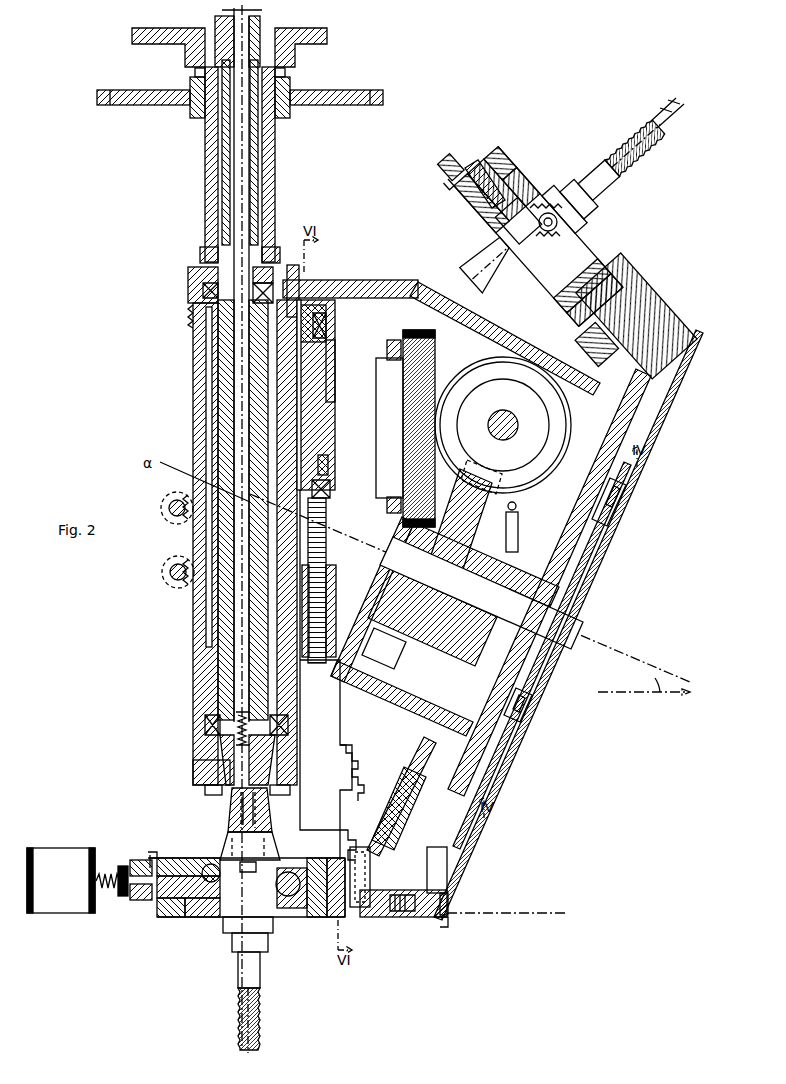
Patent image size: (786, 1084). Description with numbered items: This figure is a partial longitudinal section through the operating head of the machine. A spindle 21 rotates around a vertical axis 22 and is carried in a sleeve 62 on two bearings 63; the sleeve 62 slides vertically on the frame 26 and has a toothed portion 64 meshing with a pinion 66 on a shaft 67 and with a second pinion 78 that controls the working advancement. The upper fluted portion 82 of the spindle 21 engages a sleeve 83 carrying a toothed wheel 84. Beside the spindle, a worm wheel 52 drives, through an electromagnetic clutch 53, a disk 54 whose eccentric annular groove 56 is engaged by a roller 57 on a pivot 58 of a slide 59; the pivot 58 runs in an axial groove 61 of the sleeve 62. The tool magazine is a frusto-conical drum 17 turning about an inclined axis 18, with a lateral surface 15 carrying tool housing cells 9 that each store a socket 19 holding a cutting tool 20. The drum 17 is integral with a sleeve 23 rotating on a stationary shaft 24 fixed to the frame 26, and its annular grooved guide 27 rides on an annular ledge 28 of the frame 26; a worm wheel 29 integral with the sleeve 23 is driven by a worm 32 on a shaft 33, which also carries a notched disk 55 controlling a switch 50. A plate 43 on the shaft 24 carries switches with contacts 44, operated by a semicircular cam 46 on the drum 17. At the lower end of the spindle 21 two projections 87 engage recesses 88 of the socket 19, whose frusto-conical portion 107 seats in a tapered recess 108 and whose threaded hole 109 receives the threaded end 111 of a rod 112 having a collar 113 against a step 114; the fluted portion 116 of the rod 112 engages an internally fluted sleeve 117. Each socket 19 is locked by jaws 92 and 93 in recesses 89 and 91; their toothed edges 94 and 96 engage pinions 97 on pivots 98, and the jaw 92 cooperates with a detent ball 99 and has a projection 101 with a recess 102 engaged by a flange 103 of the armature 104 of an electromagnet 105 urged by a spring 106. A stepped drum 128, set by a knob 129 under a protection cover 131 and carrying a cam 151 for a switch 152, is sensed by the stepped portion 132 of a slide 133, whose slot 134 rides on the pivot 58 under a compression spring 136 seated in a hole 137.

The tool housing cell 9 is at (185, 920).
The lateral surface 15 is at (435, 925).
The frusto-conical shaped drum 17 is at (655, 310).
The drum axis 18 is at (600, 652).
The tool holding socket 19 is at (215, 925).
The cutting tool 20 is at (252, 970).
The spindle 21 is at (225, 415).
The vertical axis 22 is at (242, 440).
The sleeve 23 is at (480, 610).
The shaft 24 is at (465, 590).
The frame 26 is at (312, 28).
The annular grooved guide 27 is at (603, 342).
The annular ledge 28 is at (660, 405).
The worm wheel 29 is at (475, 520).
The worm 32 is at (485, 375).
The shaft 33 is at (500, 420).
The plate 43 is at (525, 735).
The contact 44 is at (612, 540).
The semicircular cam 46 is at (625, 495).
The switch 50 is at (515, 512).
The worm wheel 52 is at (392, 340).
The electromagnetic clutch 53 is at (392, 512).
The disk 54 is at (327, 335).
The disk 55 is at (566, 410).
The annular groove 56 is at (328, 465).
The roller 57 is at (313, 318).
The pivot 58 is at (300, 300).
The slide 59 is at (310, 352).
The axial groove 61 is at (290, 276).
The sleeve 62 is at (300, 392).
The bearings 63 is at (190, 283).
The toothed portion 64 is at (190, 314).
The pinion 66 is at (178, 580).
The shaft 67 is at (176, 560).
The second pinion 78 is at (178, 492).
The fluted portion 82 is at (258, 160).
The sleeve 83 is at (275, 195).
The toothed wheel 84 is at (325, 104).
The projections 87 is at (205, 790).
The recesses 88 is at (212, 864).
The locking recess 89 is at (210, 876).
The locking recess 91 is at (292, 905).
The jaw 92 is at (192, 865).
The jaw 93 is at (318, 915).
The toothed edges 94 is at (545, 262).
The toothed edges 96 is at (558, 180).
The pinions 97 is at (556, 235).
The pivots 98 is at (520, 215).
The detent ball 99 is at (160, 898).
The projection 101 is at (158, 860).
The recess 102 is at (145, 855).
The flange 103 is at (135, 902).
The armature 104 is at (122, 893).
The electromagnet 105 is at (55, 855).
The spring 106 is at (108, 875).
The frusto-conical portion 107 is at (283, 824).
The tapered recess 108 is at (233, 795).
The threaded hole 109 is at (262, 806).
The threaded end 111 is at (228, 740).
The rod 112 is at (242, 660).
The collar 113 is at (200, 71).
The step 114 is at (283, 72).
The fluted portion 116 is at (225, 27).
The internally fluted sleeve 117 is at (255, 27).
The stepped drum 128 is at (365, 905).
The knob 129 is at (447, 860).
The protection cover 131 is at (460, 880).
The stepped portion 132 is at (348, 790).
The slide 133 is at (300, 430).
The slot 134 is at (373, 380).
The compression spring 136 is at (328, 548).
The hole 137 is at (336, 598).
The cam 151 is at (356, 850).
The switch 152 is at (398, 782).